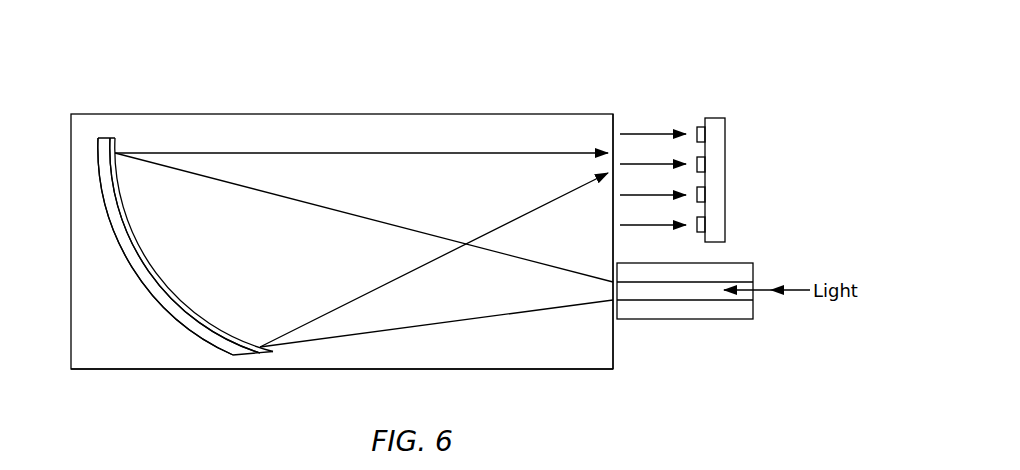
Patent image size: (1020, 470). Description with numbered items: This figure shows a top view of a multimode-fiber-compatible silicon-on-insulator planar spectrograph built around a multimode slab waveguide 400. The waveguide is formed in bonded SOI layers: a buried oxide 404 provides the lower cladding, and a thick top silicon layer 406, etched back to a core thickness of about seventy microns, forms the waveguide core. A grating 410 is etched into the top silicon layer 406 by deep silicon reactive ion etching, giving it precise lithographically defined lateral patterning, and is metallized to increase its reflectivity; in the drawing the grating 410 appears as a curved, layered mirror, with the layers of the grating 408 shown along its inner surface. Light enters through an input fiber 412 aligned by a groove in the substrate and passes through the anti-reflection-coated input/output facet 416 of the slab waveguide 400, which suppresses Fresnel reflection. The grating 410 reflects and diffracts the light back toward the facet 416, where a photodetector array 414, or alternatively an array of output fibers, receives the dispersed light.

The multimode slab waveguide 400 is at (548, 99).
The buried oxide 404 is at (142, 281).
The top silicon layer 406 is at (540, 346).
The reflective coating 408 is at (184, 318).
The grating 410 is at (147, 256).
The input fiber 412 is at (746, 320).
The photodetector array 414 is at (725, 139).
The input/output facet 416 is at (619, 347).